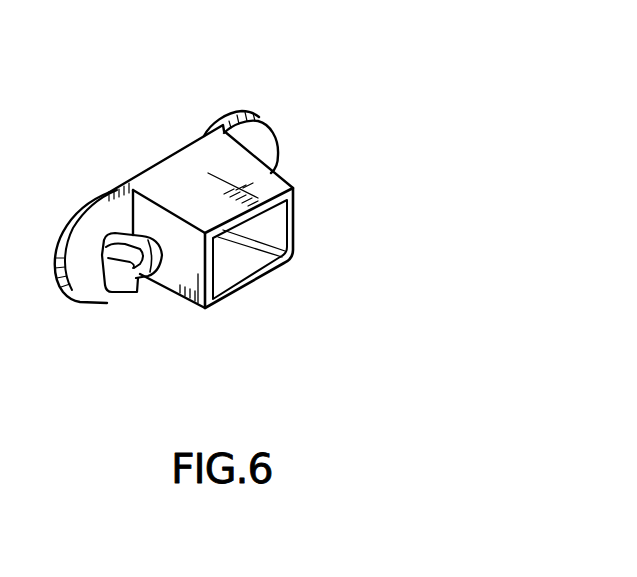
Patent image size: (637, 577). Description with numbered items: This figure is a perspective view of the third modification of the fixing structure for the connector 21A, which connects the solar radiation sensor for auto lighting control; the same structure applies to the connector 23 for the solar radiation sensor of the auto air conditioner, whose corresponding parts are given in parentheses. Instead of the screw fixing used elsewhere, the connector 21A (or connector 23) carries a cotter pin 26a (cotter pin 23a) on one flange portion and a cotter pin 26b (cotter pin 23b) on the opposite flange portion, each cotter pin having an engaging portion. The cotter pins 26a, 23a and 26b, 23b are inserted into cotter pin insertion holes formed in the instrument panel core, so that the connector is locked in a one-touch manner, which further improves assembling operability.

The connector 21A is at (177, 158).
The connector 23 is at (174, 174).
The cotter pin 26a is at (279, 169).
The cotter pin 23a is at (315, 133).
The cotter pin 26b is at (118, 291).
The cotter pin 23b is at (124, 300).